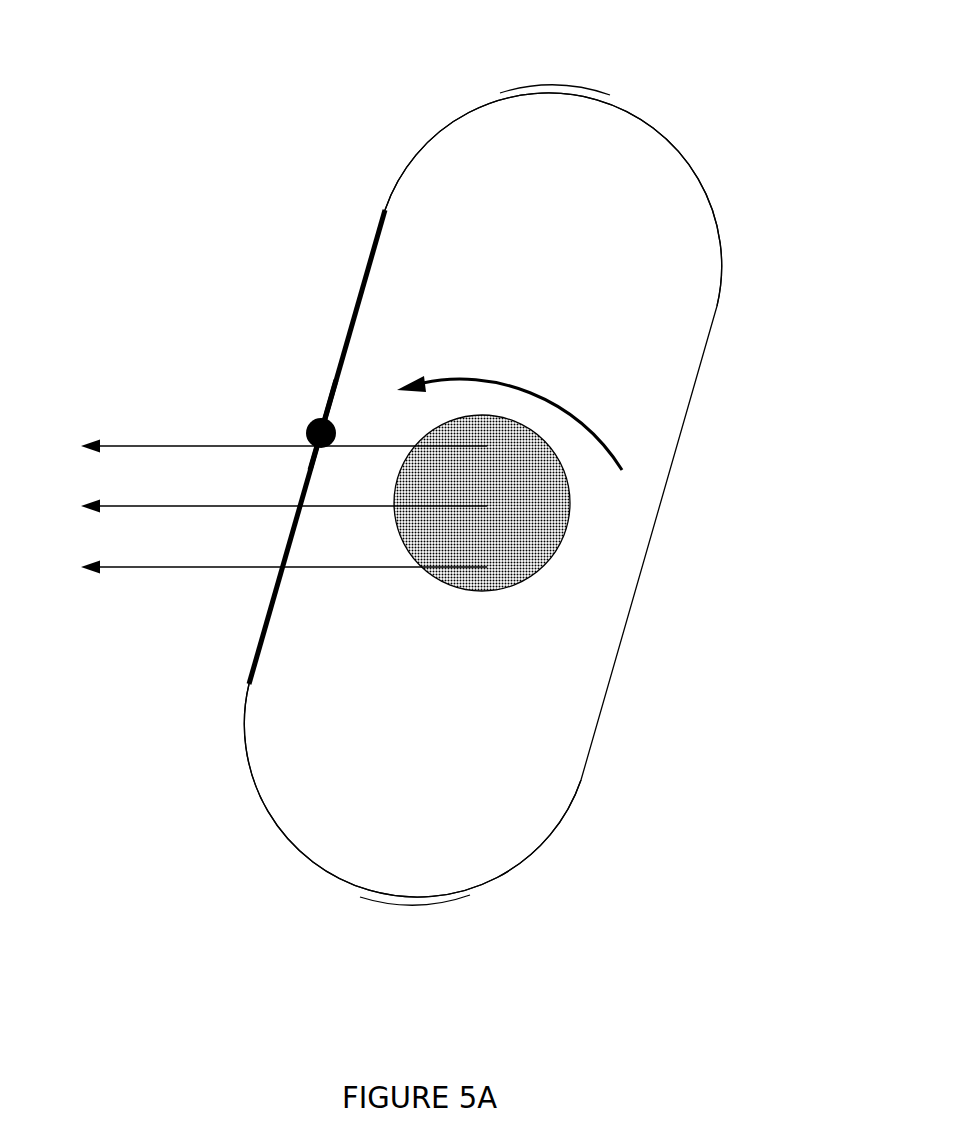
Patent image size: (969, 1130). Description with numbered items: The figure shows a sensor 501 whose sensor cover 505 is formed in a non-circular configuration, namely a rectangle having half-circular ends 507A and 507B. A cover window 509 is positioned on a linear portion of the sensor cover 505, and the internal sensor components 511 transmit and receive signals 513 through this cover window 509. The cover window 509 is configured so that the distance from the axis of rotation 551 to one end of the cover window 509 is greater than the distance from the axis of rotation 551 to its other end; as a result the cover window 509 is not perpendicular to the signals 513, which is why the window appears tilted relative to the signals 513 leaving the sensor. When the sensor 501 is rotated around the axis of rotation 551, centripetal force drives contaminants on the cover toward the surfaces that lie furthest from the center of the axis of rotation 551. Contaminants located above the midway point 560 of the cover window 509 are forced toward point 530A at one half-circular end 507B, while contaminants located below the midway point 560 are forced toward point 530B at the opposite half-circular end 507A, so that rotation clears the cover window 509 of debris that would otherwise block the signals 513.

The sensor 501 is at (662, 320).
The sensor cover 505 is at (680, 432).
The half-circular end 507A is at (460, 885).
The half-circular end 507B is at (660, 153).
The cover window 509 is at (362, 285).
The internal sensor components 511 is at (440, 420).
The signals 513 is at (217, 567).
The point 530A is at (585, 87).
The point 530B is at (358, 897).
The axis of rotation 551 is at (580, 413).
The midway point 560 is at (308, 433).